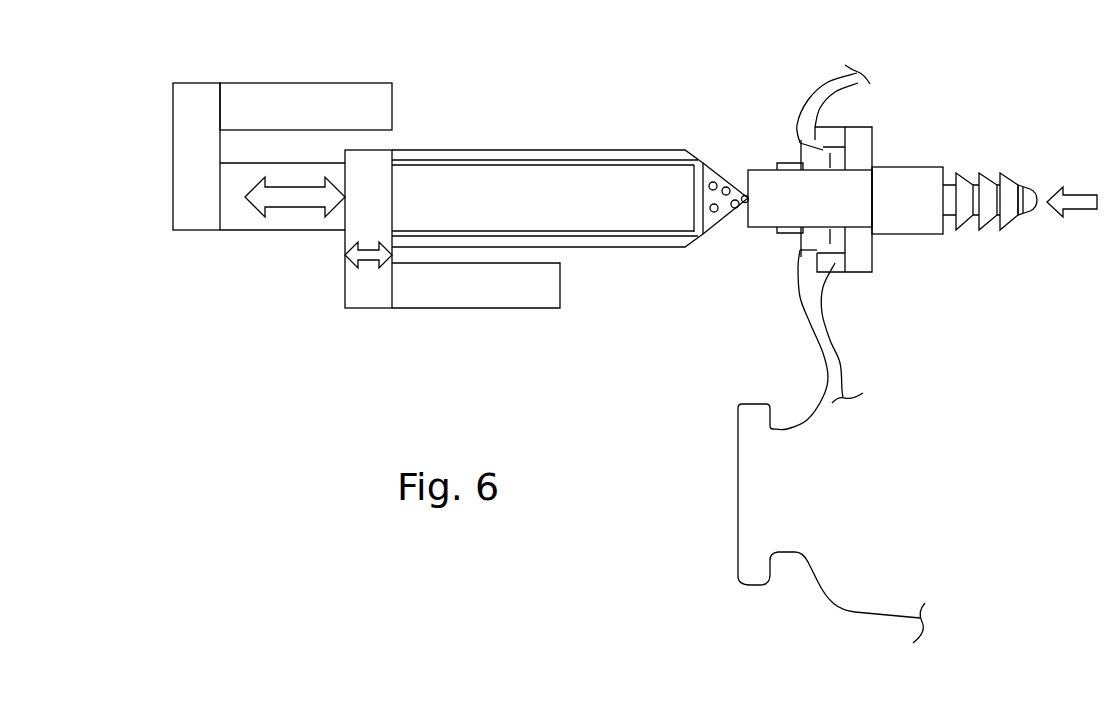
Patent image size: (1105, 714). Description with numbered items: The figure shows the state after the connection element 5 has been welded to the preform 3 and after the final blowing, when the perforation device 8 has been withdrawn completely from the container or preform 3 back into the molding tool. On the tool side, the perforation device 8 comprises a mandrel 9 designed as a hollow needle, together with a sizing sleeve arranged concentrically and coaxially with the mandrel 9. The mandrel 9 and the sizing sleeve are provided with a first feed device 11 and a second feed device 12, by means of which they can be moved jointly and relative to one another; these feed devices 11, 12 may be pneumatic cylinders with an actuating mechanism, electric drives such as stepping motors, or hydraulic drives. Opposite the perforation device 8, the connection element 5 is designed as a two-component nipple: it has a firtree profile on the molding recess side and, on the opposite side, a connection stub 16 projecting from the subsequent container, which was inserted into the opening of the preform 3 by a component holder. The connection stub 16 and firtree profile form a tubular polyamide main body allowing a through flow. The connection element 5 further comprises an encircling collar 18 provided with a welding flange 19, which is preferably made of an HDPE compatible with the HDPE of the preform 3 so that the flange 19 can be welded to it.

The preform 3 is at (858, 88).
The connection element 5 is at (992, 146).
The perforation device 8 is at (408, 74).
The mandrel 9 is at (677, 188).
The first feed device 11 is at (393, 110).
The second feed device 12 is at (563, 307).
The connection stub 16 is at (765, 217).
The encircling collar 18 is at (873, 150).
The welding flange 19 is at (838, 128).